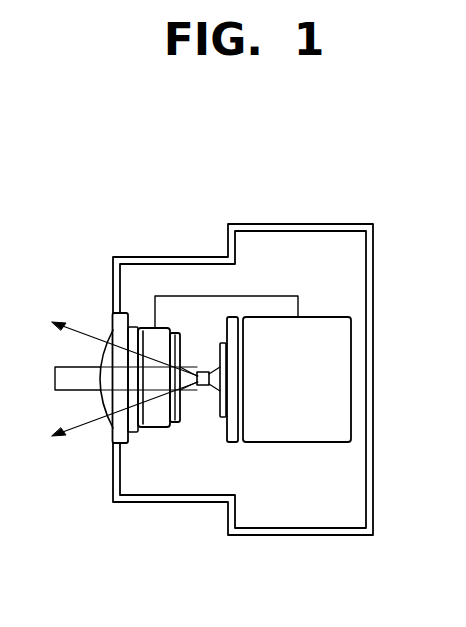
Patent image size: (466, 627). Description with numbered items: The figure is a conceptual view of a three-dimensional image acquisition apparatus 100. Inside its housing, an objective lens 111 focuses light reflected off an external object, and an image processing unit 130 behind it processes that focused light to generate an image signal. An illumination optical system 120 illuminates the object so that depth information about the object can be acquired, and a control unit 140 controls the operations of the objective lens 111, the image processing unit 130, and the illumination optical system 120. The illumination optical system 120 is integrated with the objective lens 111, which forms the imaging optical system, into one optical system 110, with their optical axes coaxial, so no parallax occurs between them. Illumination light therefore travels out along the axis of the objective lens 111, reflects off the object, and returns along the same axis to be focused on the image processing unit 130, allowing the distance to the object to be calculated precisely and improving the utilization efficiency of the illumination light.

The 3D image acquisition apparatus 100 is at (217, 353).
The optical system 110 is at (160, 299).
The objective lens 111 is at (134, 335).
The illumination optical system 120 is at (205, 368).
The image processing unit 130 is at (228, 428).
The control unit 140 is at (293, 442).